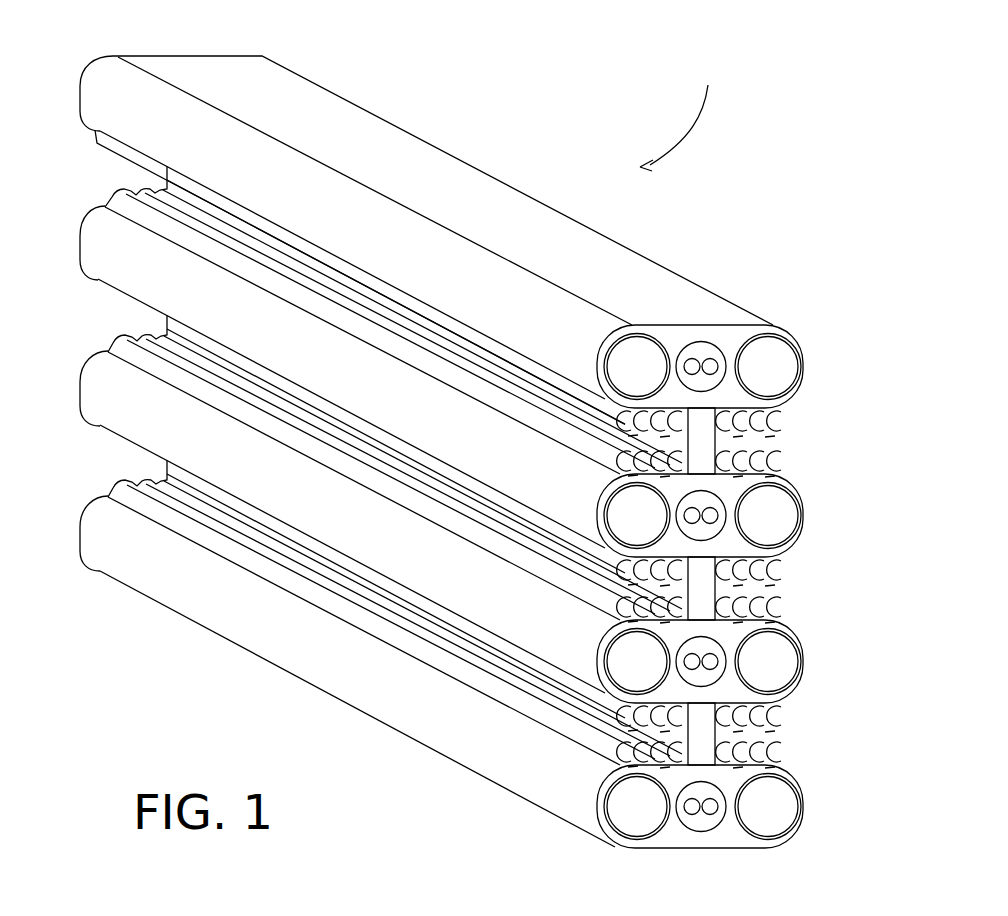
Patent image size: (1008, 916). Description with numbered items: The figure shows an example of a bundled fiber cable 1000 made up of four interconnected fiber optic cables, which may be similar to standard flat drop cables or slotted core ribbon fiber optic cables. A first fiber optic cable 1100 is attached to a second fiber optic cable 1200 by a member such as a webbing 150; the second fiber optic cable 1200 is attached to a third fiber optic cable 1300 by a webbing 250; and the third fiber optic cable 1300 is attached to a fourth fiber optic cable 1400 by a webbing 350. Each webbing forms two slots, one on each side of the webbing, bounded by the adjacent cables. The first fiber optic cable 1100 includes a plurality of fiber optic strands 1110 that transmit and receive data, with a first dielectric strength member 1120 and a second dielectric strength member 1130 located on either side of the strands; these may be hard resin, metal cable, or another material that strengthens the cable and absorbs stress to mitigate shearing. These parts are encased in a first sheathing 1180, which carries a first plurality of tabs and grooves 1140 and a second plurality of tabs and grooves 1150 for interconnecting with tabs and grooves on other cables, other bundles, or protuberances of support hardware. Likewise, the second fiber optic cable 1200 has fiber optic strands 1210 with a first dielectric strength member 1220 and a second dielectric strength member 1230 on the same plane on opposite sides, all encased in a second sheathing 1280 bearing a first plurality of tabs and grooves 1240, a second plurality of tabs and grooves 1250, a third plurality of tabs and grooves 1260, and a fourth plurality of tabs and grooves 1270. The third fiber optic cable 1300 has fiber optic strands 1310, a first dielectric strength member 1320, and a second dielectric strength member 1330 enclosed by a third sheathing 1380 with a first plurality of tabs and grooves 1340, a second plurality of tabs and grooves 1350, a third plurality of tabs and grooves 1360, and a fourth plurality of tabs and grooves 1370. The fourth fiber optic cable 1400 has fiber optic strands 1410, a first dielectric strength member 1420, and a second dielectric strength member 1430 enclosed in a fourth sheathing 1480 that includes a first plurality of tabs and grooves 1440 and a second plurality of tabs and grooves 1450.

The bundled fiber cable 1000 is at (684, 100).
The first fiber optic cable 1100 is at (98, 500).
The plurality of fiber optic strands 1110 is at (703, 812).
The first dielectric strength member 1120 is at (637, 807).
The second dielectric strength member 1130 is at (768, 807).
The first plurality of tabs and grooves 1140 is at (613, 757).
The second plurality of tabs and grooves 1150 is at (780, 763).
The first sheathing 1180 is at (682, 835).
The webbing 150 is at (717, 735).
The second fiber optic cable 1200 is at (98, 350).
The plurality of fiber optic strands 1210 is at (697, 661).
The first dielectric strength member 1220 is at (637, 662).
The second dielectric strength member 1230 is at (768, 662).
The first plurality of tabs and grooves 1240 is at (625, 718).
The second plurality of tabs and grooves 1250 is at (780, 708).
The third plurality of tabs and grooves 1260 is at (625, 612).
The fourth plurality of tabs and grooves 1270 is at (780, 612).
The second sheathing 1280 is at (404, 475).
The webbing 250 is at (717, 587).
The third fiber optic cable 1300 is at (98, 208).
The plurality of fiber optic strands 1310 is at (698, 514).
The first dielectric strength member 1320 is at (637, 516).
The second dielectric strength member 1330 is at (768, 516).
The first plurality of tabs and grooves 1340 is at (625, 565).
The second plurality of tabs and grooves 1350 is at (780, 558).
The third plurality of tabs and grooves 1360 is at (620, 468).
The fourth plurality of tabs and grooves 1370 is at (773, 472).
The third sheathing 1380 is at (404, 329).
The webbing 350 is at (717, 437).
The fourth fiber optic cable 1400 is at (93, 66).
The plurality of fiber optic strands 1410 is at (697, 364).
The first dielectric strength member 1420 is at (637, 367).
The second dielectric strength member 1430 is at (768, 367).
The first plurality of tabs and grooves 1440 is at (600, 380).
The second plurality of tabs and grooves 1450 is at (777, 410).
The fourth sheathing 1480 is at (733, 332).